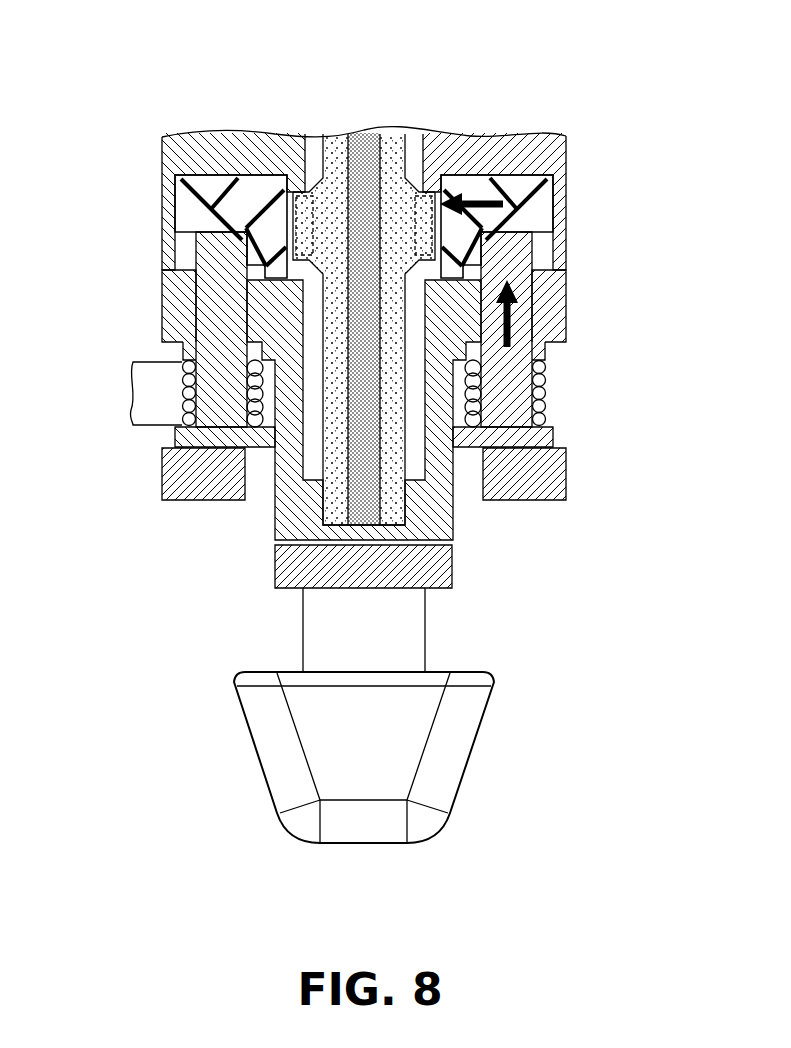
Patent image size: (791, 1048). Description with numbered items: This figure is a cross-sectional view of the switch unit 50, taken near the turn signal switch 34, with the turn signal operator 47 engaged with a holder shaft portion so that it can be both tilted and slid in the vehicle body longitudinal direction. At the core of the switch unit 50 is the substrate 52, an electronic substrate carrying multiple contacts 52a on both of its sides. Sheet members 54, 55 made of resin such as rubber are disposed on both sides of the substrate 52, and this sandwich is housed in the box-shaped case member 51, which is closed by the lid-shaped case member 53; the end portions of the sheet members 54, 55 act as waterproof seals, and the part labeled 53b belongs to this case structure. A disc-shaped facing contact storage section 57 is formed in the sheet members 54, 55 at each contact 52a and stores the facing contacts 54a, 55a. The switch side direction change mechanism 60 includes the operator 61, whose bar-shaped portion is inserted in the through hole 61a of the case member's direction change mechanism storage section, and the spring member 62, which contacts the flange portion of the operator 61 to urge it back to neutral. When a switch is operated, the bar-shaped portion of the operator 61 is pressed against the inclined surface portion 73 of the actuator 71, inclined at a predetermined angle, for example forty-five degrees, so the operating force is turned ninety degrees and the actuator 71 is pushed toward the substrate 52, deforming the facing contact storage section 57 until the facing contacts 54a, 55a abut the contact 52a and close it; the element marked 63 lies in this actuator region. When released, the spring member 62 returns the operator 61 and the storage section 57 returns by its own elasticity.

The turn signal switch 34 is at (363, 828).
The turn signal operator 47 is at (530, 503).
The switch unit 50 is at (355, 464).
The box-shaped case member 51 is at (440, 575).
The substrate 52 is at (365, 133).
The contact 52a is at (298, 194).
The lid-shaped case member 53 is at (280, 512).
The housing 53b is at (162, 148).
The sheet member 54 is at (333, 198).
The facing contact 54a is at (290, 185).
The sheet member 55 is at (395, 198).
The facing contact 55a is at (440, 185).
The facing contact storage section 57 is at (200, 258).
The switch side direction change mechanism 60 is at (176, 436).
The operator 61 is at (180, 318).
The through hole 61a is at (178, 296).
The spring member 62 is at (248, 394).
The seal lip 63 is at (250, 228).
The actuator 71 is at (215, 150).
The inclined surface portion 73 is at (178, 205).